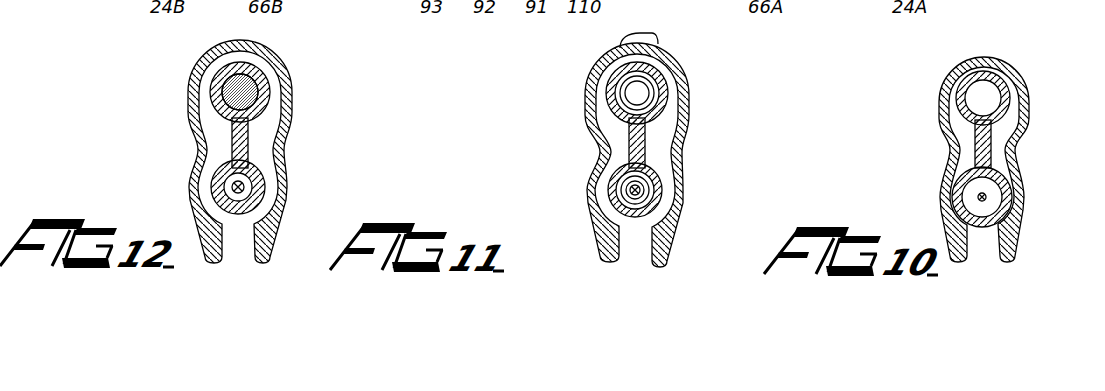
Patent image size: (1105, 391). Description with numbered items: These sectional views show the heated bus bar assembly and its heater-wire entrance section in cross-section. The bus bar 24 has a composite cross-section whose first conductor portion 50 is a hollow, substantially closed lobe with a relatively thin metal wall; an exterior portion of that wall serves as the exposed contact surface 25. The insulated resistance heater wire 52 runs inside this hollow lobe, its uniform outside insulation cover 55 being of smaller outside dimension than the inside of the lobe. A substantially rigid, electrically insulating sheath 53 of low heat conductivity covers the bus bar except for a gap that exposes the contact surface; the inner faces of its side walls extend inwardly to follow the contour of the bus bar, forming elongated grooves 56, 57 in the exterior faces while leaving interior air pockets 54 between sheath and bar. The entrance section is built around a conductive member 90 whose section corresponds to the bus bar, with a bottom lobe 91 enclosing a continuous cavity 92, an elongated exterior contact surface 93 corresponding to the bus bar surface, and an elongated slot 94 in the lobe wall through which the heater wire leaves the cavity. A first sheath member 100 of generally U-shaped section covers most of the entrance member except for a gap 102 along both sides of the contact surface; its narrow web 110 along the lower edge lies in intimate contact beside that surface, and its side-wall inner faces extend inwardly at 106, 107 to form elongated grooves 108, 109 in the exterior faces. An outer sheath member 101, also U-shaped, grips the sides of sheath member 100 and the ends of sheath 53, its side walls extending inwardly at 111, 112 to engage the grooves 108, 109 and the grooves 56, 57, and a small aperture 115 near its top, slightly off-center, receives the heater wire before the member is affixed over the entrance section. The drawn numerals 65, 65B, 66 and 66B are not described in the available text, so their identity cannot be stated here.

In FIG. 10, the bus bar 24 is at (1006, 105).
In FIG. 10, the exposed contact surface 25 is at (987, 228).
In FIG. 10, the first conductor portion 50 is at (1017, 157).
In FIG. 12, the insulated resistance heater wire 52 is at (232, 187).
In FIG. 11, the insulated resistance heater wire 52 is at (630, 184).
In FIG. 10, the insulated resistance heater wire 52 is at (963, 181).
In FIG. 12, the sheath 53 is at (198, 97).
In FIG. 10, the sheath 53 is at (990, 58).
In FIG. 10, the interior air pockets 54 is at (957, 133).
In FIG. 10, the outside insulation cover 55 is at (988, 197).
In FIG. 10, the elongated groove 56 is at (1016, 146).
In FIG. 10, the elongated groove 57 is at (962, 149).
In FIG. 11, the cable 65 is at (627, 80).
In FIG. 12, the cable 65B is at (247, 78).
In FIG. 11, the inner member 66 is at (680, 155).
In FIG. 12, the inner member 66B is at (193, 205).
In FIG. 12, the conductive member 90 is at (212, 80).
In FIG. 11, the conductive member 90 is at (660, 90).
In FIG. 12, the bottom lobe 91 is at (210, 146).
In FIG. 12, the cavity 92 is at (282, 152).
In FIG. 12, the contact surface 93 is at (255, 230).
In FIG. 11, the contact surface 93 is at (642, 228).
In FIG. 11, the elongated slot 94 is at (620, 162).
In FIG. 12, the first sheath member 100 is at (285, 184).
In FIG. 11, the first sheath member 100 is at (683, 192).
In FIG. 12, the sheath member 101 is at (292, 84).
In FIG. 11, the sheath member 101 is at (690, 117).
In FIG. 12, the gap 102 is at (226, 227).
In FIG. 11, the gap 102 is at (625, 237).
In FIG. 12, the inwardly extending inner face 106 is at (191, 127).
In FIG. 11, the inwardly extending inner face 106 is at (600, 115).
In FIG. 12, the inwardly extending inner face 107 is at (292, 108).
In FIG. 11, the inwardly extending inner face 107 is at (697, 123).
In FIG. 12, the elongated groove 108 is at (190, 125).
In FIG. 12, the elongated groove 109 is at (283, 146).
In FIG. 11, the elongated groove 109 is at (700, 128).
In FIG. 12, the web 110 is at (267, 248).
In FIG. 11, the web 110 is at (667, 248).
In FIG. 12, the inwardly extending side wall portion 111 is at (200, 152).
In FIG. 11, the inwardly extending side wall portion 111 is at (590, 133).
In FIG. 12, the inwardly extending side wall portion 112 is at (284, 136).
In FIG. 11, the inwardly extending side wall portion 112 is at (687, 147).
In FIG. 11, the small aperture 115 is at (657, 36).